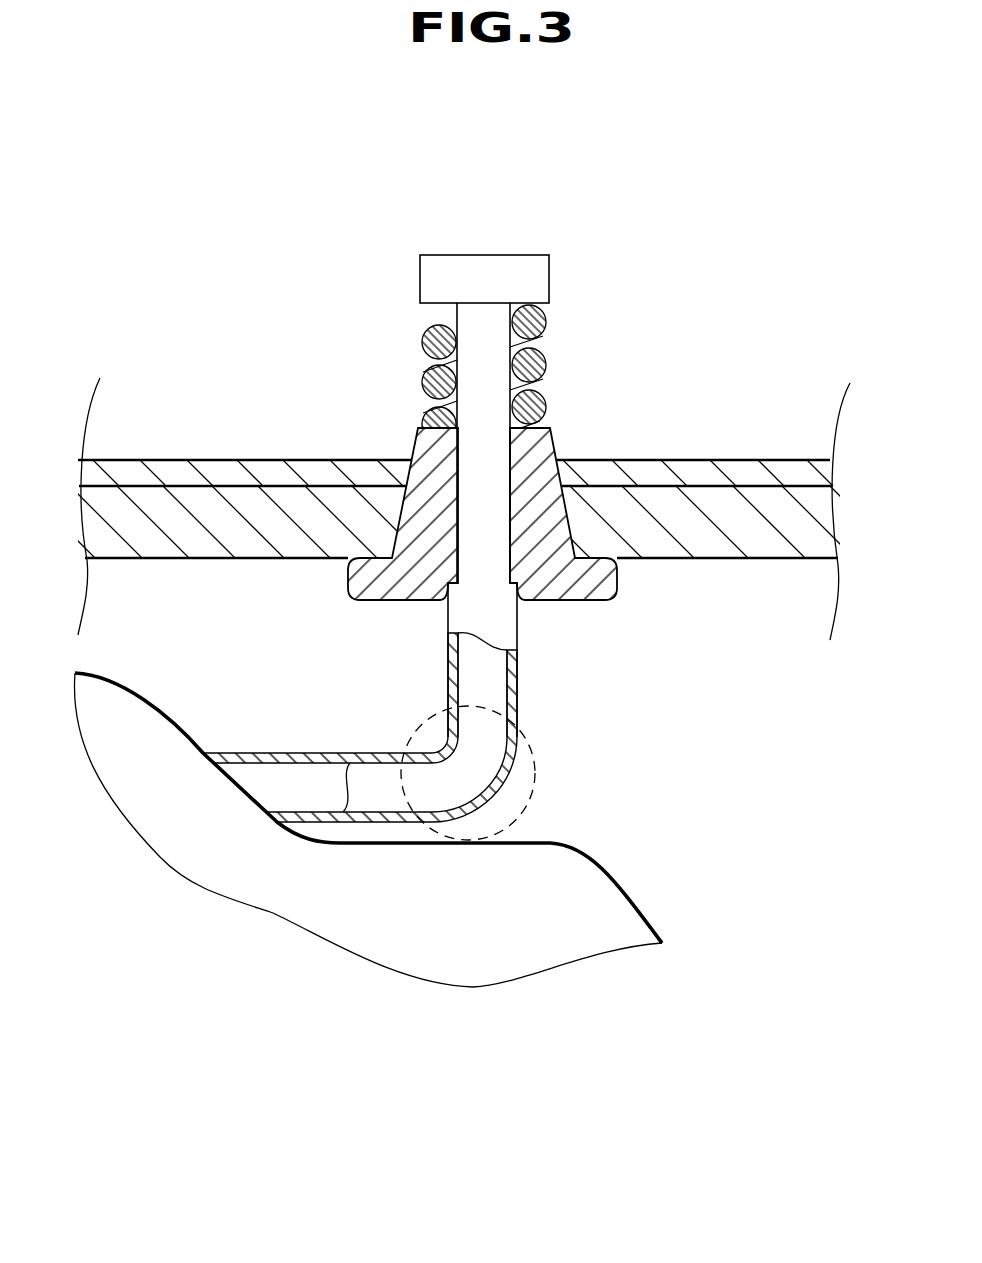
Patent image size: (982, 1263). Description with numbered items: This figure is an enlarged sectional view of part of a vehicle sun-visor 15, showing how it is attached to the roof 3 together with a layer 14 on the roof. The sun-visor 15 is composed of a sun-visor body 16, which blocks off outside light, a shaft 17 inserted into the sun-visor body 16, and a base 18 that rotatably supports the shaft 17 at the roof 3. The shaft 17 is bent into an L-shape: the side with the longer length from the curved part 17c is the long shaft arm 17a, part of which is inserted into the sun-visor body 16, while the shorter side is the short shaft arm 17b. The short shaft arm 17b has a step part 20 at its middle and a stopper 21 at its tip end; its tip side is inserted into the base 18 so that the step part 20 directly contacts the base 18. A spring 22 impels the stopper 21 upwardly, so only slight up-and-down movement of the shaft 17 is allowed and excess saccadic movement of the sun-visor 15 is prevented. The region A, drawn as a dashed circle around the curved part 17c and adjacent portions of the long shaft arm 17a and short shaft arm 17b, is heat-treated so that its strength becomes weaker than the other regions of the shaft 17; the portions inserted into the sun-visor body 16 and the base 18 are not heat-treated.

The roof 3 is at (185, 458).
The sheet layer on panel 14 is at (297, 458).
The sun-visor 15 is at (163, 708).
The sun-visor body 16 is at (365, 811).
The shaft 17 is at (423, 815).
The long shaft arm 17a is at (392, 818).
The short shaft arm 17b is at (447, 650).
The curved part 17c is at (507, 790).
The base 18 is at (597, 582).
The step part 20 is at (555, 583).
The stopper 21 is at (522, 260).
The spring 22 is at (535, 358).
The region A is at (537, 762).